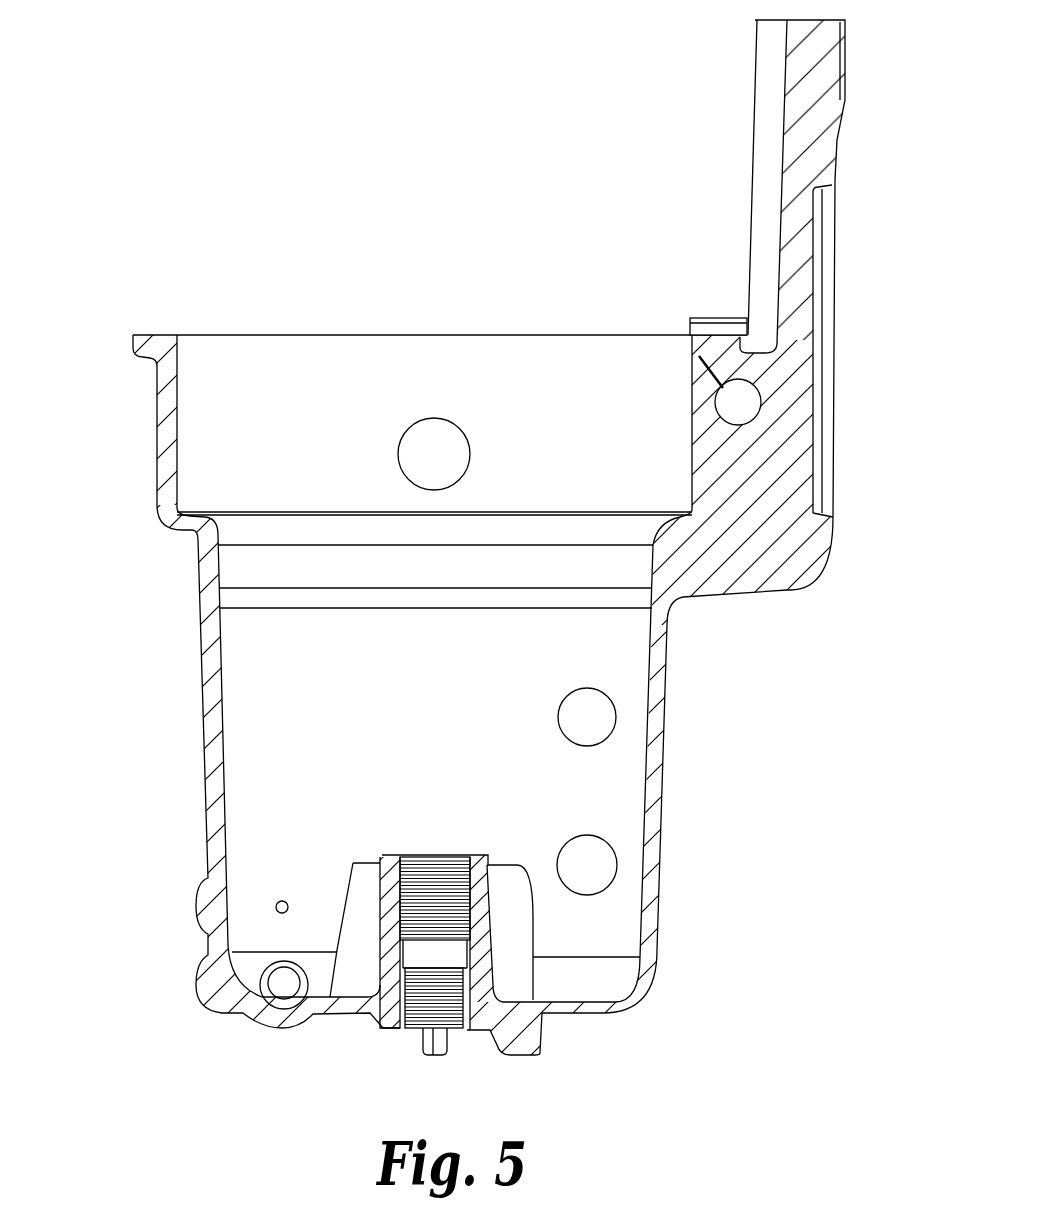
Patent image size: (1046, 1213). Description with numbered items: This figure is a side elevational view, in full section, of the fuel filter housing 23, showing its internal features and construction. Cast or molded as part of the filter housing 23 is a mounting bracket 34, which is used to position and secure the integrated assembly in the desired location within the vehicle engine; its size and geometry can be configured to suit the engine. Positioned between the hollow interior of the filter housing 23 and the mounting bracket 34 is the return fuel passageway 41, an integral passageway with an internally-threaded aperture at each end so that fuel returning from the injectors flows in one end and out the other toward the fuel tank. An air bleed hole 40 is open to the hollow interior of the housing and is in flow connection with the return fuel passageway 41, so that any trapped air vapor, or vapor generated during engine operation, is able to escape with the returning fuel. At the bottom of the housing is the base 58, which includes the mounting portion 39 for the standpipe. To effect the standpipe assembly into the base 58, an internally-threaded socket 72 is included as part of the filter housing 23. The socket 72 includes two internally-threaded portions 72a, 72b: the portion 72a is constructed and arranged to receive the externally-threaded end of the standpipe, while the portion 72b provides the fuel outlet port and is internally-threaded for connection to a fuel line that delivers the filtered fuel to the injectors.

The filter housing 23 is at (104, 292).
The mounting bracket 34 is at (817, 63).
The mounting portion 39 is at (490, 905).
The air bleed hole 40 is at (695, 360).
The return fuel passageway 41 is at (750, 410).
The base 58 is at (385, 1000).
The internally-threaded socket 72 is at (467, 929).
The internally-threaded portion 72a is at (422, 857).
The internally-threaded portion 72b is at (455, 997).